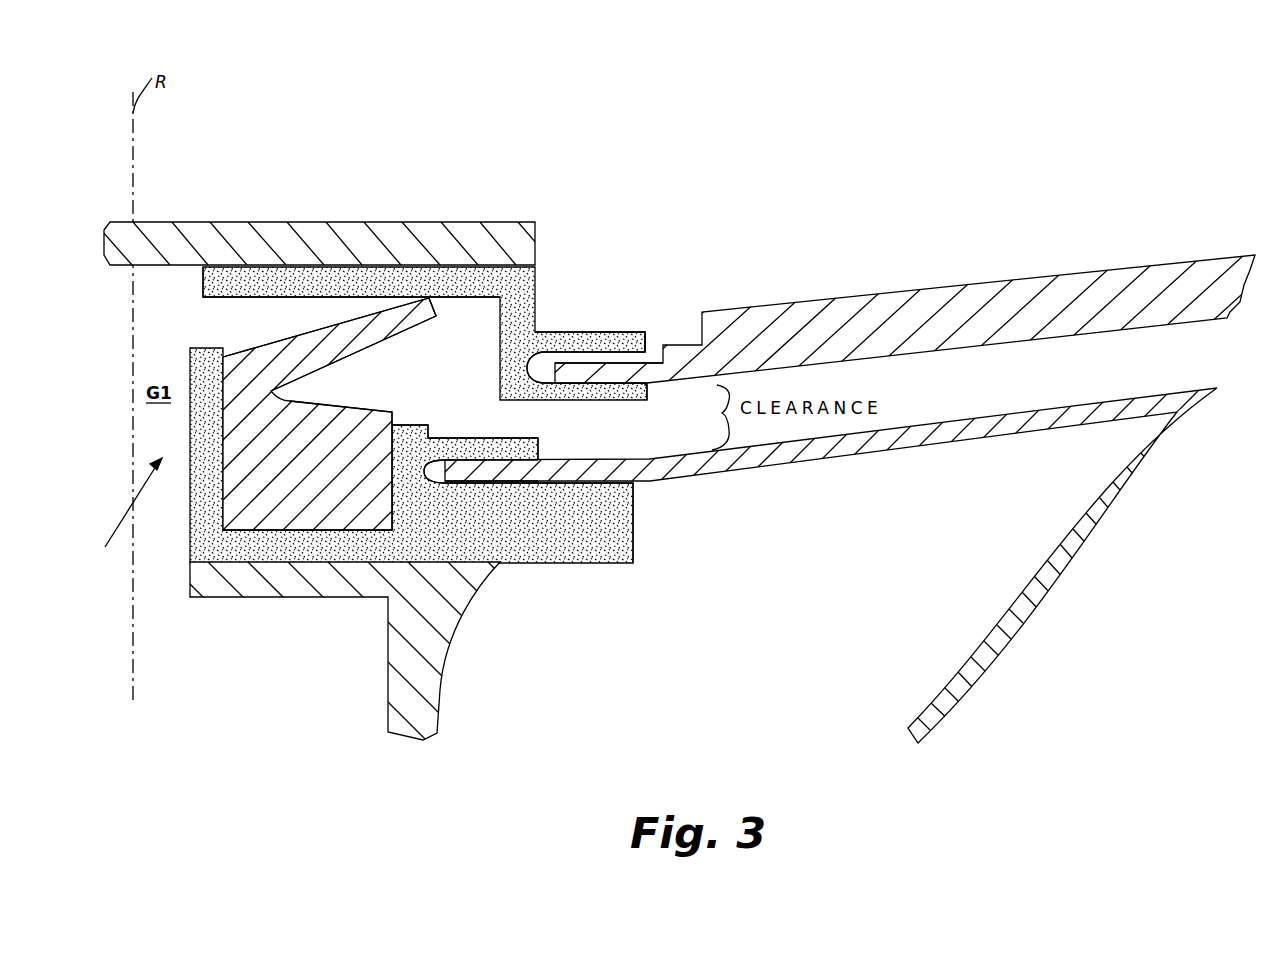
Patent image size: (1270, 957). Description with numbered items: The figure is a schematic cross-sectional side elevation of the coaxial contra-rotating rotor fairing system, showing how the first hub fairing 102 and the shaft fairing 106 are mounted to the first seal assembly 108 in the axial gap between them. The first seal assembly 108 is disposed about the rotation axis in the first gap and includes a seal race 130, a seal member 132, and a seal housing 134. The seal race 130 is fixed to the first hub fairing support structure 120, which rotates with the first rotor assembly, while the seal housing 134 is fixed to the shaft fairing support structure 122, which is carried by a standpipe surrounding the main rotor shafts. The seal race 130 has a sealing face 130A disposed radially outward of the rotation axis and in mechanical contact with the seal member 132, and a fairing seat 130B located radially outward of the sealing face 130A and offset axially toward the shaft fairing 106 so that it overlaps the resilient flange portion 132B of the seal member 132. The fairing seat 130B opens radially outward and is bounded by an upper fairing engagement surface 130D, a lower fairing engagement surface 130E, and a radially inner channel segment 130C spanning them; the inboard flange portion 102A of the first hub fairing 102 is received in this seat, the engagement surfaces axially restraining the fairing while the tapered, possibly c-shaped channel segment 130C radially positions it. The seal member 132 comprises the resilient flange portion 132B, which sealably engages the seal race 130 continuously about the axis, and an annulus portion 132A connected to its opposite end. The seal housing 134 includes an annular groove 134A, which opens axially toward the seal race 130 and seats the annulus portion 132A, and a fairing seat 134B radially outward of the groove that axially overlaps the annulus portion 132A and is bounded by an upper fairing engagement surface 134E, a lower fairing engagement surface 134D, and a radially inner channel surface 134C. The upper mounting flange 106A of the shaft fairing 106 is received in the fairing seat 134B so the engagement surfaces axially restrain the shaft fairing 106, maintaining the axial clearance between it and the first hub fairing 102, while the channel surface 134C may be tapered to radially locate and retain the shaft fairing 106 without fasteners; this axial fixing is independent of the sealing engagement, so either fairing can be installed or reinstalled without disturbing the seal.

The first hub fairing 102 is at (1088, 325).
The inboard flange portion 102A is at (622, 375).
The shaft fairing 106 is at (1110, 514).
The upper mounting flange 106A is at (563, 470).
The first seal assembly 108 is at (118, 519).
The first hub fairing support structure 120 is at (173, 230).
The shaft fairing support structure 122 is at (427, 703).
The seal race 130 is at (437, 290).
The sealing face 130A is at (248, 298).
The fairing seat 130B is at (540, 342).
The radially inner channel segment 130C is at (500, 362).
The upper fairing engagement surface 130D is at (614, 346).
The lower fairing engagement surface 130E is at (548, 392).
The seal member 132 is at (234, 344).
The annulus portion 132A is at (333, 481).
The resilient flange portion 132B is at (322, 370).
The seal housing 134 is at (347, 543).
The annular groove 134A is at (237, 567).
The fairing seat 134B is at (443, 467).
The radially inner channel surface 134C is at (430, 485).
The lower fairing engagement surface 134D is at (490, 473).
The upper fairing engagement surface 134E is at (488, 458).